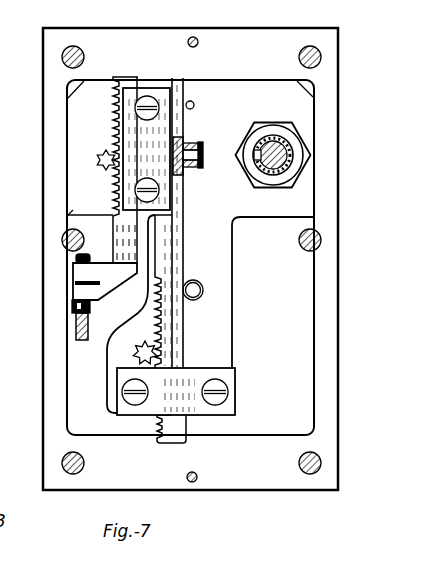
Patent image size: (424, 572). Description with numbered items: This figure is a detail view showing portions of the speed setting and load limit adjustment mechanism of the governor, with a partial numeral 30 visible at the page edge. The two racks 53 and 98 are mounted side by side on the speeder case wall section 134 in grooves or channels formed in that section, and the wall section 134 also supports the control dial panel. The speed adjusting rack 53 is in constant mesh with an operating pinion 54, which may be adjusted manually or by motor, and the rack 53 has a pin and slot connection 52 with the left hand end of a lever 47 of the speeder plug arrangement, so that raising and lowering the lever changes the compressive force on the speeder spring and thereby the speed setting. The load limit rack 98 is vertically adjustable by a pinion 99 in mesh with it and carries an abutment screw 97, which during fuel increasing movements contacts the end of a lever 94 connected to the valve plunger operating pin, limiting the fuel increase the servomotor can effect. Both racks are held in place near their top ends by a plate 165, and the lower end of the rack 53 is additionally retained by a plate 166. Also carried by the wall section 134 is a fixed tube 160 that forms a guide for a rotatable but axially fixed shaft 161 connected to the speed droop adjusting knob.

The mounting plate 30 is at (8, 210).
The lever 47 is at (193, 170).
The pin and slot connection 52 is at (202, 150).
The rack 53 is at (180, 328).
The operating pinion 54 is at (140, 344).
The lever 94 is at (77, 330).
The abutment screw 97 is at (77, 302).
The rack 98 is at (115, 190).
The pinion 99 is at (102, 163).
The wall section 134 is at (292, 392).
The fixed tube 160 is at (288, 148).
The shaft 161 is at (267, 142).
The plate 165 is at (170, 121).
The plate 166 is at (208, 372).